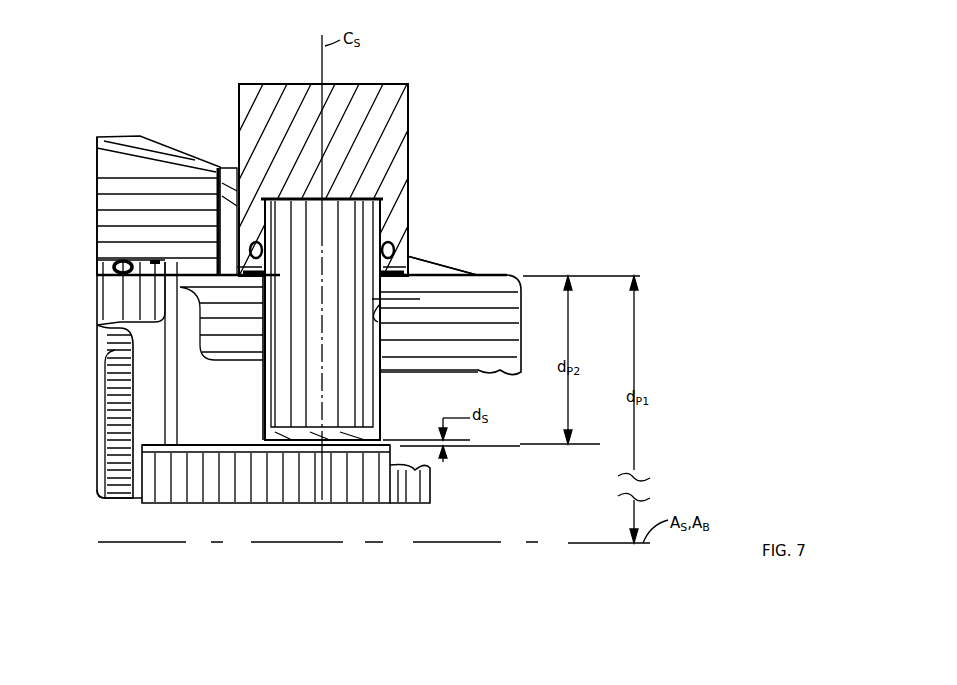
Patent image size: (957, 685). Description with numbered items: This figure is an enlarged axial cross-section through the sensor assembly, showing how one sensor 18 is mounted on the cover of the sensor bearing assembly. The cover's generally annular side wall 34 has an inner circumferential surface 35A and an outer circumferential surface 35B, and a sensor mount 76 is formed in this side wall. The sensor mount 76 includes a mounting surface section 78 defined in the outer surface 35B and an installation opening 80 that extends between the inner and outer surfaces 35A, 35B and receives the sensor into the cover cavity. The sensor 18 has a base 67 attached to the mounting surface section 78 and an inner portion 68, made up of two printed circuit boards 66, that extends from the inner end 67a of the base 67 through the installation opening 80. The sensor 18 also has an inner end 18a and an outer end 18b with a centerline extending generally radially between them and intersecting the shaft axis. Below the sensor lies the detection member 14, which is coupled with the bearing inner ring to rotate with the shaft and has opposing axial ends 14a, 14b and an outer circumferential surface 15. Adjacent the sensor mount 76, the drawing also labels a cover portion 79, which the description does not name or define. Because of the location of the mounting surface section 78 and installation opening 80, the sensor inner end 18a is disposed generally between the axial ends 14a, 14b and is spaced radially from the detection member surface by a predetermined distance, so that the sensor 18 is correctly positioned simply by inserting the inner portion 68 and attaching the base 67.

The detection member 14 is at (151, 444).
The axial end of detection member 14a is at (426, 482).
The axial end of detection member 14b is at (138, 470).
The detection member outer circumferential surface 15 is at (218, 443).
The sensor 18 is at (458, 145).
The sensor inner end 18a is at (337, 445).
The sensor outer end 18b is at (375, 84).
The side wall 34 is at (472, 275).
The side wall inner circumferential surface 35A is at (446, 373).
The side wall outer circumferential surface 35B is at (506, 275).
The printed circuit board 66 is at (300, 385).
The sensor base 67 is at (402, 120).
The inner end of base 67a is at (407, 258).
The sensor inner portion 68 is at (262, 383).
The sensor mount 76 is at (230, 166).
The mounting surface section 78 is at (451, 274).
The outer block 79 is at (227, 232).
The installation opening 80 is at (406, 307).